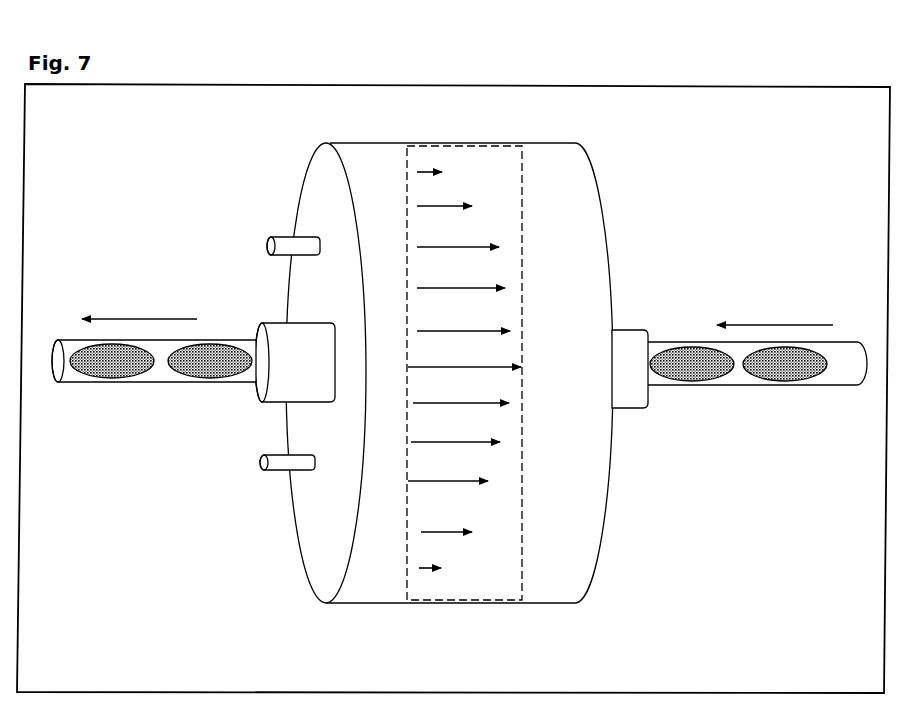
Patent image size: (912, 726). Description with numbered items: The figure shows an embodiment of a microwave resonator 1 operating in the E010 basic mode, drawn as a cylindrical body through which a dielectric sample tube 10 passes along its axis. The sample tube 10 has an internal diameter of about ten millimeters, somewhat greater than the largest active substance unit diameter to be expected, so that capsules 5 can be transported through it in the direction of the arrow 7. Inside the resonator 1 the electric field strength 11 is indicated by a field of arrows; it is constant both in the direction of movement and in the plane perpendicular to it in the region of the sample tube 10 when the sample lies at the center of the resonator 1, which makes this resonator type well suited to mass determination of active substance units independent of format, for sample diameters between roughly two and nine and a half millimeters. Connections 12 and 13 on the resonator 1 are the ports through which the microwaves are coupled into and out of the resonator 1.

The microwave resonator 1 is at (573, 559).
The capsule 5 is at (720, 380).
The arrow 7 is at (122, 315).
The dielectric sample tube 10 is at (632, 388).
The electric field strength 11 is at (442, 283).
The connection 12 is at (288, 245).
The connection 13 is at (287, 462).